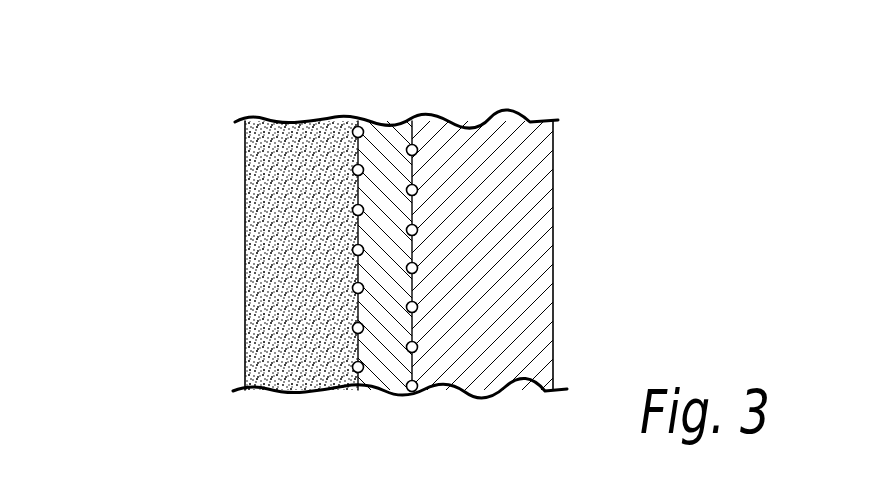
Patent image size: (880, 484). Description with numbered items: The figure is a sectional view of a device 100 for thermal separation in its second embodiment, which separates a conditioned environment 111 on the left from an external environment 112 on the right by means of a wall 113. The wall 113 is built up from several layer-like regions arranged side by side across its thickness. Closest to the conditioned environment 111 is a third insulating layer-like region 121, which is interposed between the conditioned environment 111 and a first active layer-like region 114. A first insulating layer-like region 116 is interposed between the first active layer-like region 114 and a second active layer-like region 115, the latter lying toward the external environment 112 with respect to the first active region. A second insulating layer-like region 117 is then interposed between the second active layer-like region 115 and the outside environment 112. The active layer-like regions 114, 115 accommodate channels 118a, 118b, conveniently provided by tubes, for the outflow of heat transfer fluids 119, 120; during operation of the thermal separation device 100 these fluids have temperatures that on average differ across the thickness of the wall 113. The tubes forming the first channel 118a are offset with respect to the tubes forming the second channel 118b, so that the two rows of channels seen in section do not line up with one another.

The device for thermal separation 100 is at (436, 222).
The conditioned environment 111 is at (221, 219).
The external environment 112 is at (549, 219).
The wall 113 is at (236, 179).
The first active layer-like region 114 is at (361, 96).
The second active layer-like region 115 is at (408, 96).
The first insulating layer-like region 116 is at (407, 96).
The second insulating layer-like region 117 is at (550, 97).
The first channel 118a is at (340, 250).
The second channel 118b is at (430, 150).
The heat transfer fluid 119 is at (352, 210).
The heat transfer fluid 120 is at (418, 190).
The third insulating layer-like region 121 is at (355, 97).